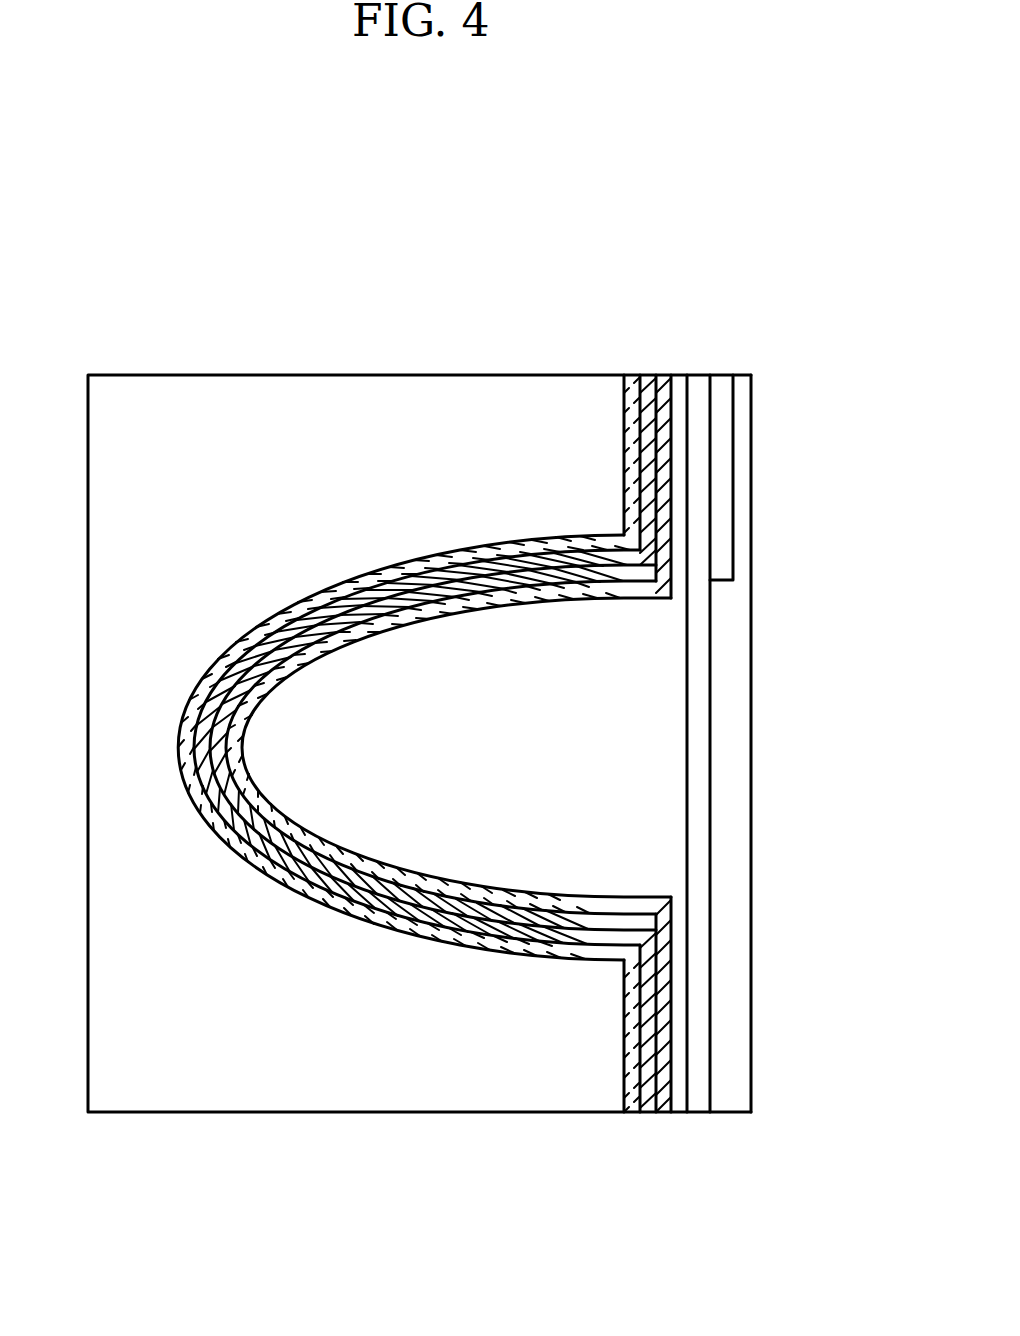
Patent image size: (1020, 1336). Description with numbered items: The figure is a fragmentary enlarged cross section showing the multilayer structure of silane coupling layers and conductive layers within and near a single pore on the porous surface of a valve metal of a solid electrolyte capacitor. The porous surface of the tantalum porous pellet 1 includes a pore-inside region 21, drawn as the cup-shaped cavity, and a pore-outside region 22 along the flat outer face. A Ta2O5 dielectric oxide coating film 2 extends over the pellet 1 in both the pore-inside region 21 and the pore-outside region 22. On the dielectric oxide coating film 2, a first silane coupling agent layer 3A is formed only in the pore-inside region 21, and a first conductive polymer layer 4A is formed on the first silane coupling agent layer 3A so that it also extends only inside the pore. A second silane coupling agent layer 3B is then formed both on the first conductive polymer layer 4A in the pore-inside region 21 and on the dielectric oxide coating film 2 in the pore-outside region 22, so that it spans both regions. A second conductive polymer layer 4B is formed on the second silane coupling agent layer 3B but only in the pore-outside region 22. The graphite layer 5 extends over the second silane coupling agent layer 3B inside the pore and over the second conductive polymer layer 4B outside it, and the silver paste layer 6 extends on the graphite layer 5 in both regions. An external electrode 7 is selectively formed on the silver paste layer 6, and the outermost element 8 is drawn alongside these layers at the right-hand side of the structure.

The tantalum porous pellet 1 is at (325, 383).
The Ta2O5 dielectric oxide coating film 2 is at (636, 380).
The first silane coupling agent layer 3A is at (478, 547).
The first conductive polymer layer 4A is at (563, 557).
The second silane coupling agent layer 3B is at (651, 393).
The second conductive polymer layer 4B is at (668, 478).
The graphite layer 5 is at (669, 708).
The silver paste layer 6 is at (703, 652).
The external electrode 7 is at (727, 567).
The substrate 8 is at (743, 757).
The pore-inside region 21 is at (600, 813).
The pore-outside region 22 is at (682, 1033).